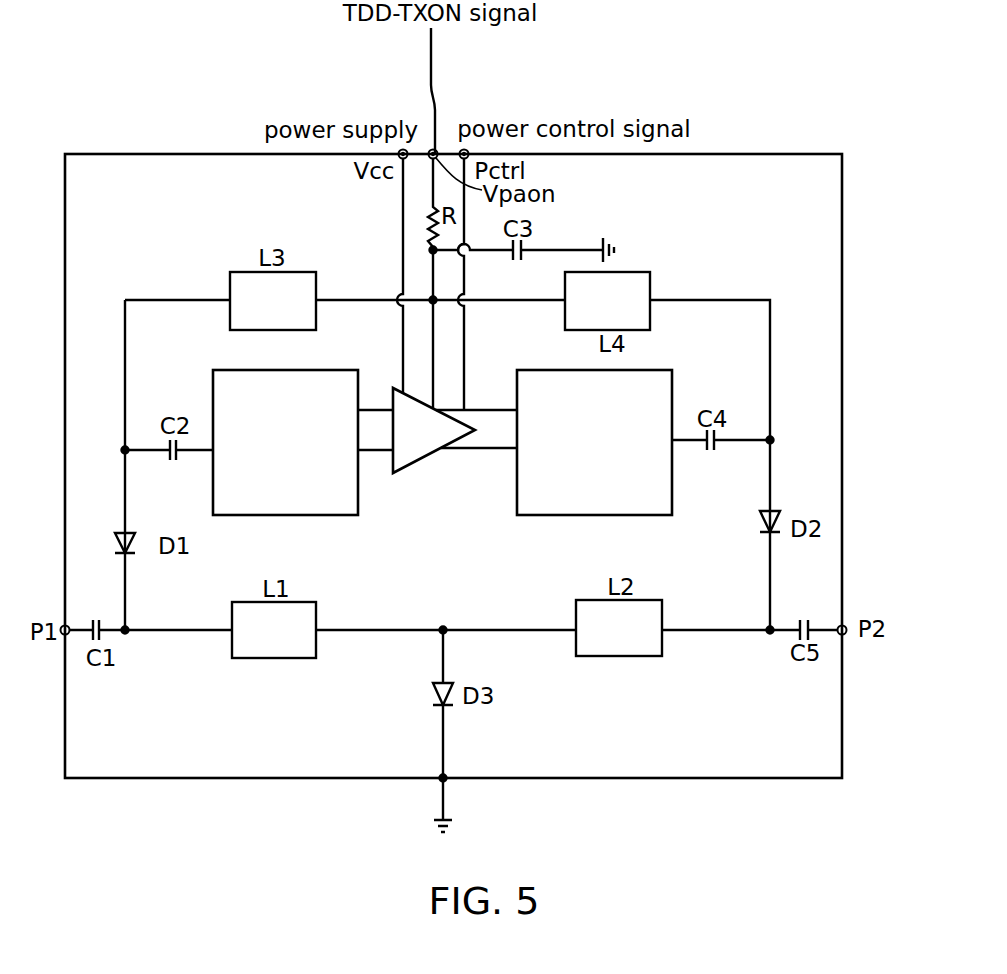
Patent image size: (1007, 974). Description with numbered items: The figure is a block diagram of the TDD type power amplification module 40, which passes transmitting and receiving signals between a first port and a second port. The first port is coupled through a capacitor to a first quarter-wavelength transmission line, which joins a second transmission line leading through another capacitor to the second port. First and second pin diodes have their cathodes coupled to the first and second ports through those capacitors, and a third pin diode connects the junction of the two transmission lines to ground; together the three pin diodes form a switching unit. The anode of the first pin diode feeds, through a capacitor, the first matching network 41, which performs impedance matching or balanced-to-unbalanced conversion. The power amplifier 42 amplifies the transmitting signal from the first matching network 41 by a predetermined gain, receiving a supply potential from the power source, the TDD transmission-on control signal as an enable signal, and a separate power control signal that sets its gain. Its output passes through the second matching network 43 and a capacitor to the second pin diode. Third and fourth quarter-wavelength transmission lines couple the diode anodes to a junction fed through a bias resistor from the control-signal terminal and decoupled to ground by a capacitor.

The TDD type power amplification module 40 is at (733, 154).
The first matching network 41 is at (276, 515).
The power amplifier 42 is at (430, 447).
The second matching network 43 is at (575, 500).